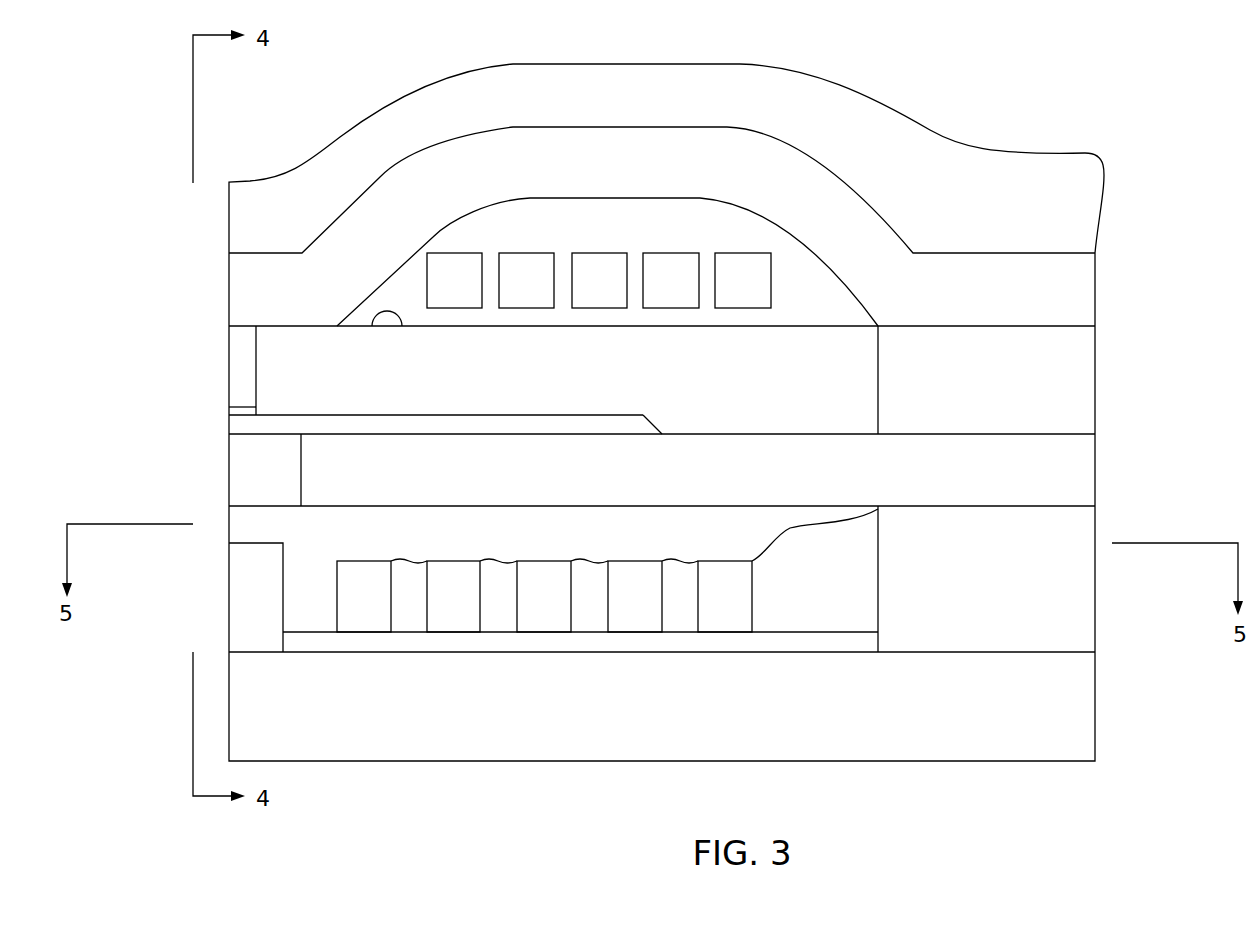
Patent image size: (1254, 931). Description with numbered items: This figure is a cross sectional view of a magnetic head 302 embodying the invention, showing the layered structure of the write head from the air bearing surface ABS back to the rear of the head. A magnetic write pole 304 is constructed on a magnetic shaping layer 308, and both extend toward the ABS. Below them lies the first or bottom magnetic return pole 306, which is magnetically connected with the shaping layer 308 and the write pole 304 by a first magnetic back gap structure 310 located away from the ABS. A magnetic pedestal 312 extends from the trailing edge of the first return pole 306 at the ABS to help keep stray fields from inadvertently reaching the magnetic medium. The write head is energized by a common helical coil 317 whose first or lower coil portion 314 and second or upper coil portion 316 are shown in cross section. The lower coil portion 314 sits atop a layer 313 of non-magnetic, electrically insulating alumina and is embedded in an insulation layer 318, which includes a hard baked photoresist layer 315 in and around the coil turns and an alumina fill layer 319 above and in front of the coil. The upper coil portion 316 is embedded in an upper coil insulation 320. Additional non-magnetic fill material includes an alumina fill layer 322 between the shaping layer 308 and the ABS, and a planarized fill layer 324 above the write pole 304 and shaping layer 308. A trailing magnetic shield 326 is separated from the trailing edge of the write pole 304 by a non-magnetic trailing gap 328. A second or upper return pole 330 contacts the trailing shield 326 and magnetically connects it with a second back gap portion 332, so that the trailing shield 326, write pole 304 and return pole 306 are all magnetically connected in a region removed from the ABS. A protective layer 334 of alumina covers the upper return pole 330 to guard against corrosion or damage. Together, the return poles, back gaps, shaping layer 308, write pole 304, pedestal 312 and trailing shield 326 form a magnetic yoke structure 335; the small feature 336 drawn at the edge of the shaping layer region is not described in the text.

The magnetic head 302 is at (838, 70).
The magnetic write pole 304 is at (497, 425).
The first or bottom magnetic return pole 306 is at (666, 725).
The magnetic shaping layer 308 is at (675, 472).
The first magnetic back gap structure 310 is at (1032, 580).
The magnetic pedestal 312 is at (245, 590).
The layer of non-magnetic, electrically insulating material 313 is at (715, 642).
The first or lower coil portion 314 is at (544, 596).
The hard baked photoresist layer 315 is at (838, 592).
The second or upper coil portion 316 is at (599, 280).
The helical coil 317 is at (678, 247).
The insulation layer 318 is at (740, 499).
The alumina fill layer 319 is at (418, 535).
The upper coil insulation 320 is at (624, 233).
The alumina fill layer 322 is at (255, 472).
The planarized fill layer 324 is at (553, 372).
The trailing magnetic shield 326 is at (247, 362).
The trailing gap 328 is at (237, 412).
The second or upper return pole 330 is at (628, 163).
The second back gap portion 332 is at (987, 380).
The protective layer 334 is at (622, 100).
The magnetic yoke structure 335 is at (850, 176).
The via 336 is at (402, 326).
The air bearing surface ABS is at (229, 524).